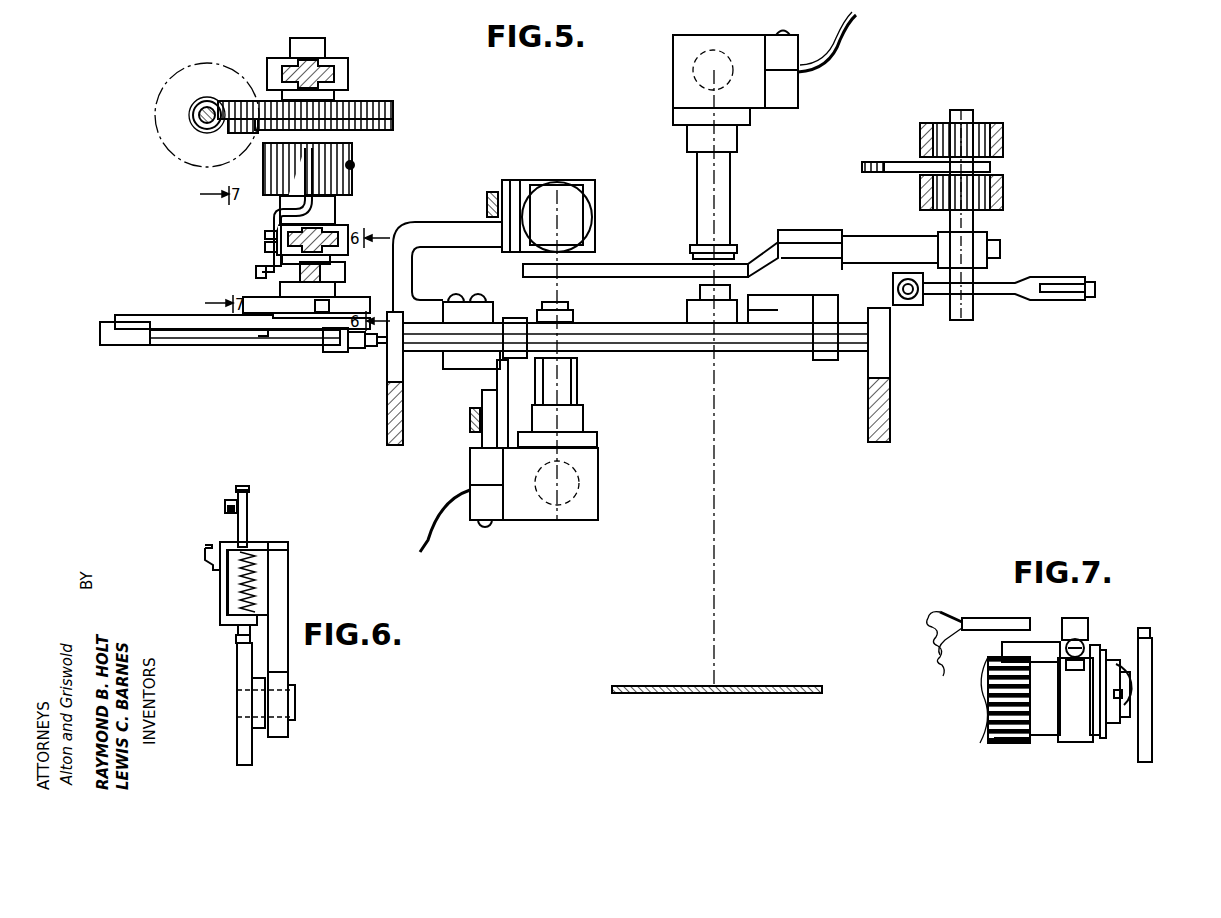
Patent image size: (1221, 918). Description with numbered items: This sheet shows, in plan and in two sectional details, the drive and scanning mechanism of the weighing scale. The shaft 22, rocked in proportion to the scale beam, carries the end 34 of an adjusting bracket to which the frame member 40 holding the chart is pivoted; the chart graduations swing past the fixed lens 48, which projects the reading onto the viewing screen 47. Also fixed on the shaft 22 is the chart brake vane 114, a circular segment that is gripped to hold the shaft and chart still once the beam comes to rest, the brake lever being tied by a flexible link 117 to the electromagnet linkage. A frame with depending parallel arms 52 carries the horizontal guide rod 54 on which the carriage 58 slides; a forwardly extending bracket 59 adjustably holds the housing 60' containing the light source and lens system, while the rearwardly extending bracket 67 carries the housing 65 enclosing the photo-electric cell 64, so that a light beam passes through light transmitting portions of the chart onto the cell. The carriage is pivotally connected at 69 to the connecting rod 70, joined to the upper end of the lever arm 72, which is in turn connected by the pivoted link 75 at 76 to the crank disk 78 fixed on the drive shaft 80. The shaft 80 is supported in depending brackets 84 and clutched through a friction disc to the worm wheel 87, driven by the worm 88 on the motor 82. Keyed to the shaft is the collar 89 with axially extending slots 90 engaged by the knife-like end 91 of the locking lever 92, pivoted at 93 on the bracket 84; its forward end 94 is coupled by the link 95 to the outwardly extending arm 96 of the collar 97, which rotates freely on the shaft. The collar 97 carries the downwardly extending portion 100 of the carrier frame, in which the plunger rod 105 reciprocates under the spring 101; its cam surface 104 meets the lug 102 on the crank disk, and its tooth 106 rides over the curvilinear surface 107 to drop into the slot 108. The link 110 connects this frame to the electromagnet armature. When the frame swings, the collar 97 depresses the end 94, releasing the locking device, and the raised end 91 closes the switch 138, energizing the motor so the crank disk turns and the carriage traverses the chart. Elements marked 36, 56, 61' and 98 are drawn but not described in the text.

In FIG. 5, the shaft 22 is at (973, 312).
In FIG. 5, the end of adjusting bracket 34 is at (890, 242).
In FIG. 5, the pinion 36 is at (240, 133).
In FIG. 5, the frame member 40 is at (628, 277).
In FIG. 5, the viewing screen 47 is at (780, 686).
In FIG. 5, the fixed lens 48 is at (688, 300).
In FIG. 5, the depending parallel arm 52 is at (403, 432).
In FIG. 5, the horizontal guide rod 54 is at (666, 347).
In FIG. 5, the bearing block 56 is at (800, 315).
In FIG. 5, the carriage 58 is at (446, 363).
In FIG. 5, the forwardly extending bracket 59 is at (496, 381).
In FIG. 5, the housing 60' is at (527, 371).
In FIG. 5, the plunger 61' is at (570, 374).
In FIG. 5, the photo-electric cell 64 is at (566, 215).
In FIG. 5, the housing 65 is at (585, 186).
In FIG. 5, the bracket 67 is at (437, 222).
In FIG. 5, the pivotal connection 69 is at (363, 352).
In FIG. 5, the connecting rod 70 is at (222, 345).
In FIG. 5, the lever arm 72 is at (108, 341).
In FIG. 5, the pivoted link 75 is at (160, 314).
In FIG. 5, the crank disk connection 76 is at (262, 329).
In FIG. 5, the crank disk 78 is at (262, 305).
In FIG. 6, the crank disk 78 is at (237, 671).
In FIG. 7, the crank disk 78 is at (1152, 660).
In FIG. 5, the drive shaft 80 is at (330, 259).
In FIG. 6, the drive shaft 80 is at (248, 717).
In FIG. 7, the drive shaft 80 is at (1120, 668).
In FIG. 5, the motor 82 is at (166, 146).
In FIG. 5, the bracket 84 is at (267, 62).
In FIG. 7, the bracket 84 is at (1076, 618).
In FIG. 5, the worm wheel 87 is at (378, 100).
In FIG. 5, the worm 88 is at (190, 115).
In FIG. 5, the collar 89 is at (354, 165).
In FIG. 7, the collar 89 is at (1012, 743).
In FIG. 5, the axially extending slots 90 is at (272, 164).
In FIG. 7, the axially extending slots 90 is at (987, 717).
In FIG. 5, the knife-like end of locking lever 91 is at (304, 166).
In FIG. 7, the knife-like end of locking lever 91 is at (1002, 651).
In FIG. 5, the locking lever 92 is at (336, 207).
In FIG. 7, the locking lever 92 is at (1050, 642).
In FIG. 5, the pivot 93 is at (265, 236).
In FIG. 7, the pivot 93 is at (1075, 657).
In FIG. 5, the forward end of locking lever 94 is at (265, 247).
In FIG. 7, the forward end of locking lever 94 is at (1095, 645).
In FIG. 5, the link 95 is at (258, 283).
In FIG. 7, the link 95 is at (1100, 690).
In FIG. 7, the outwardly extending arm 96 is at (1108, 723).
In FIG. 5, the collar 97 is at (346, 269).
In FIG. 6, the collar 97 is at (278, 728).
In FIG. 7, the collar 97 is at (1118, 720).
In FIG. 5, the arm 98 is at (321, 278).
In FIG. 6, the arm 98 is at (288, 595).
In FIG. 6, the downwardly extending portion 100 is at (221, 597).
In FIG. 6, the spring 101 is at (250, 578).
In FIG. 5, the lug 102 is at (329, 306).
In FIG. 6, the lug 102 is at (236, 640).
In FIG. 7, the lug 102 is at (1145, 630).
In FIG. 6, the cam surface 104 is at (238, 629).
In FIG. 6, the plunger rod 105 is at (247, 523).
In FIG. 6, the tooth 106 is at (238, 488).
In FIG. 6, the curvilinear surface 107 is at (225, 506).
In FIG. 6, the slot 108 is at (228, 514).
In FIG. 6, the link 110 is at (212, 565).
In FIG. 5, the chart brake vane 114 is at (876, 162).
In FIG. 6, the flexible link 117 is at (205, 548).
In FIG. 7, the switch 138 is at (995, 618).